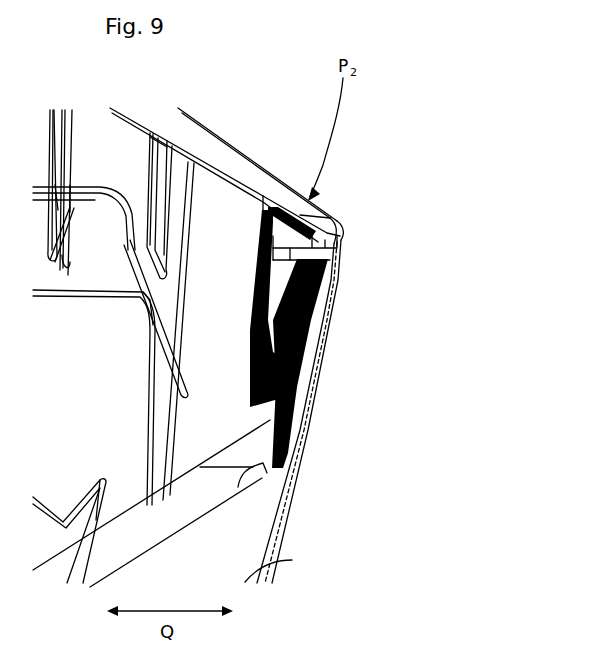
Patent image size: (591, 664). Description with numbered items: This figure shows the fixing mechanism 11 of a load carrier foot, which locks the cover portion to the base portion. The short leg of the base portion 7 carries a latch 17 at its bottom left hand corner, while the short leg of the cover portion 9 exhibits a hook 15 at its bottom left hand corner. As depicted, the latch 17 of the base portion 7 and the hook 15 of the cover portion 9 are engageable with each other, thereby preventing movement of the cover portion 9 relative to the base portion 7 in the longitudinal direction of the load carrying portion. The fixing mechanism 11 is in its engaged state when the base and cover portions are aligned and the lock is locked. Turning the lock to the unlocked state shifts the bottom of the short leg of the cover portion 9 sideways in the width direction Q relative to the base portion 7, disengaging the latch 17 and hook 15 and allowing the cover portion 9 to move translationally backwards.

The short leg of the base portion 7 is at (281, 518).
The short leg of the cover portion 9 is at (193, 133).
The fixing mechanism 11 is at (367, 232).
The hook 15 is at (250, 375).
The latch 17 is at (317, 320).